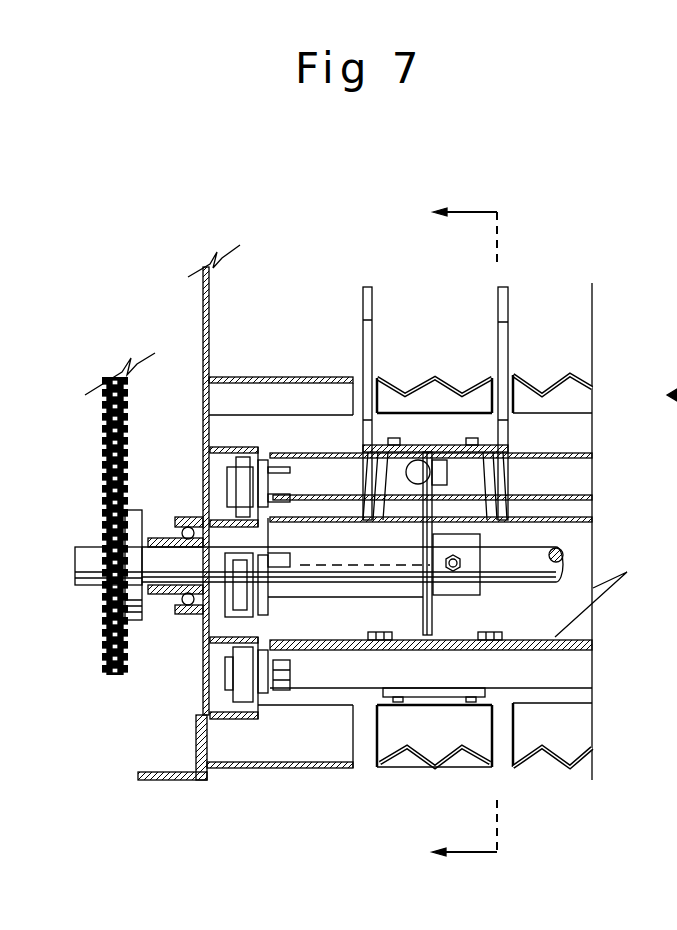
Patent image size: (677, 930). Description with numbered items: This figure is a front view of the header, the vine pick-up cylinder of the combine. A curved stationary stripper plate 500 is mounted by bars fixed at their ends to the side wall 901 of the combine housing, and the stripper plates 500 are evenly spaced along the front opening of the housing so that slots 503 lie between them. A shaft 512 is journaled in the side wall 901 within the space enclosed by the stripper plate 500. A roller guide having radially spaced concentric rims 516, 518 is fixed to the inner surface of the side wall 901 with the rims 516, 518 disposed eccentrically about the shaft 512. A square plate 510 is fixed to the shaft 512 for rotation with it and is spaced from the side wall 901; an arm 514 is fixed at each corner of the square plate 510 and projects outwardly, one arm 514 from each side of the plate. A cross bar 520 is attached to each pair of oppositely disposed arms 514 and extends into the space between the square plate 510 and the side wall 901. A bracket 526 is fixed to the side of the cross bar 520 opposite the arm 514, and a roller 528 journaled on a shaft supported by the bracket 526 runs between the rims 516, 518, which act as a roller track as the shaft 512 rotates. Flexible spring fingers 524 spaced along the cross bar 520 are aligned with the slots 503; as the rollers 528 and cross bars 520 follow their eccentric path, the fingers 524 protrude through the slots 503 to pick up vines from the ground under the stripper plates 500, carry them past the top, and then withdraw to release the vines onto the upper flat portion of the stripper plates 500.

The side wall 901 is at (208, 308).
The stationary curve stripper plate 500 is at (270, 376).
The roller 528 is at (241, 448).
The bracket 526 is at (243, 468).
The flexible spring fingers 524 is at (372, 300).
The cross bar 520 is at (565, 470).
The shaft 512 is at (528, 553).
The square plate 510 is at (433, 613).
The arm 514 is at (418, 628).
The rim 516 is at (230, 636).
The rim 518 is at (223, 717).
The slot 503 is at (368, 770).